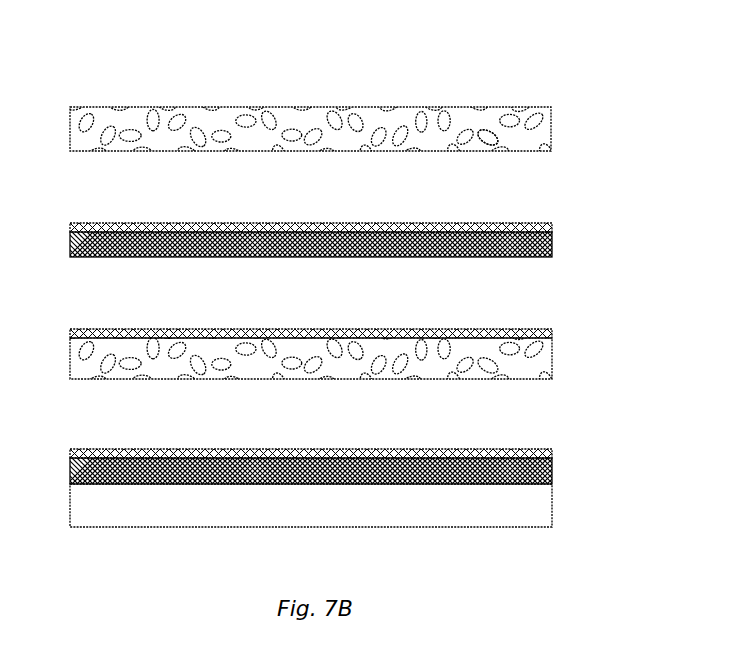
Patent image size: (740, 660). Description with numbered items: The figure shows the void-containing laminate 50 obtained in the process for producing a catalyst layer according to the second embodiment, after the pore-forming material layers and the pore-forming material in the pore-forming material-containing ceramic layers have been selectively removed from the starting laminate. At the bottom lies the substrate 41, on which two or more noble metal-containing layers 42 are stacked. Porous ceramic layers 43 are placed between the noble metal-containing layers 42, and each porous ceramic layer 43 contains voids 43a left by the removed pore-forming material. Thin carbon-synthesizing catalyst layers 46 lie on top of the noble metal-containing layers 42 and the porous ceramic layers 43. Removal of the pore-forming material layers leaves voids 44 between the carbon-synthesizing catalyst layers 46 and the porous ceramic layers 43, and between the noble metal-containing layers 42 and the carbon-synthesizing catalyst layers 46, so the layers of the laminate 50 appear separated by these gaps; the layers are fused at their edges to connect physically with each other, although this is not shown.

The void-containing laminate 50 is at (316, 90).
The substrate 41 is at (535, 508).
The noble metal-containing layer 42 is at (553, 240).
The porous ceramic layer 43 is at (543, 120).
The void 43a is at (495, 123).
The void 44 is at (540, 418).
The carbon-synthesizing catalyst layer 46 is at (552, 223).